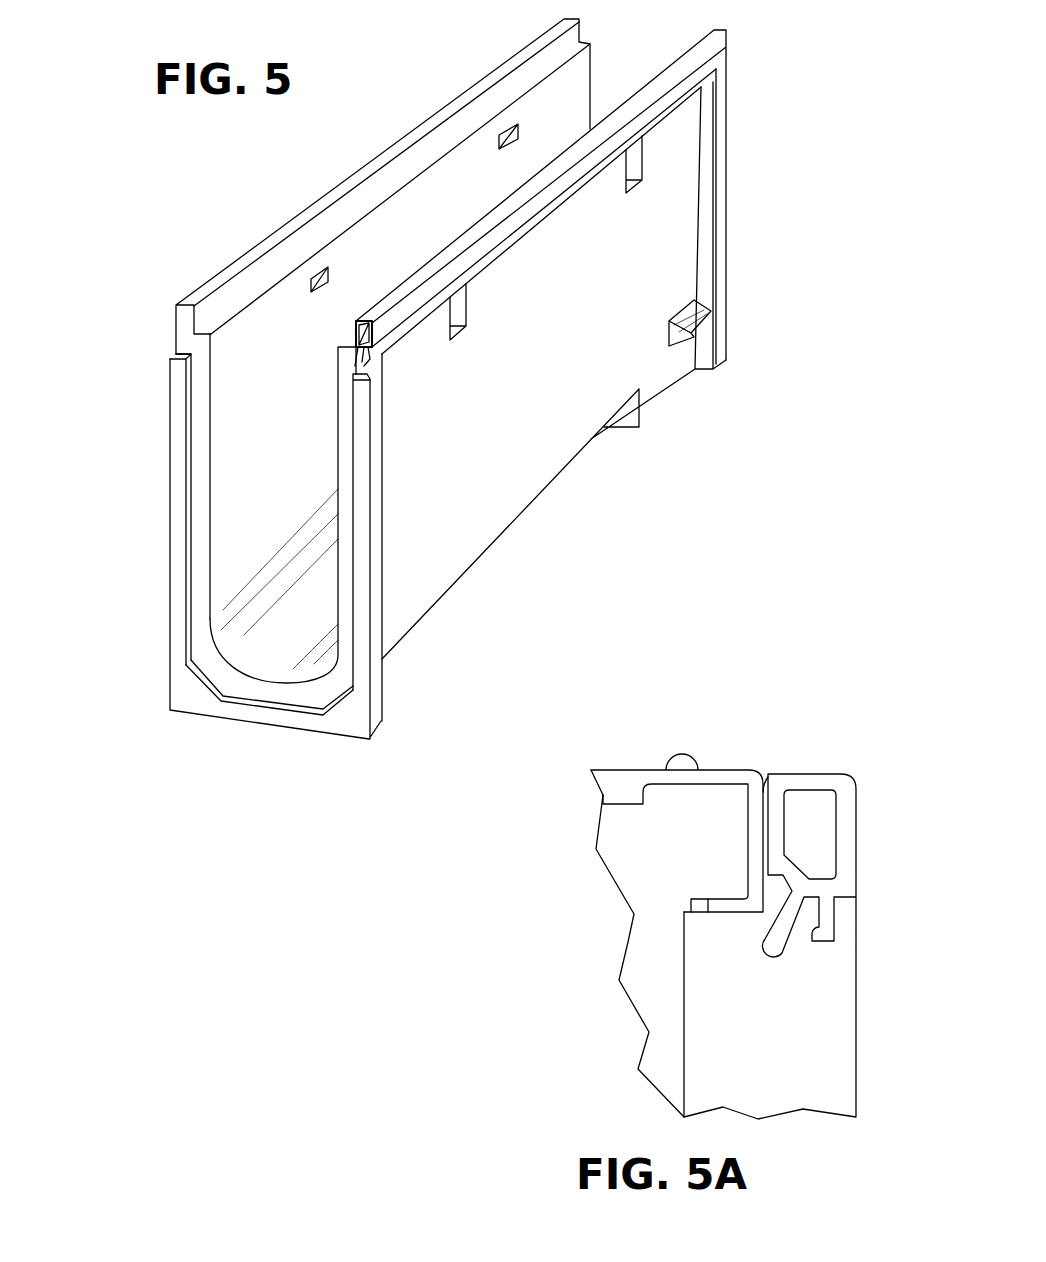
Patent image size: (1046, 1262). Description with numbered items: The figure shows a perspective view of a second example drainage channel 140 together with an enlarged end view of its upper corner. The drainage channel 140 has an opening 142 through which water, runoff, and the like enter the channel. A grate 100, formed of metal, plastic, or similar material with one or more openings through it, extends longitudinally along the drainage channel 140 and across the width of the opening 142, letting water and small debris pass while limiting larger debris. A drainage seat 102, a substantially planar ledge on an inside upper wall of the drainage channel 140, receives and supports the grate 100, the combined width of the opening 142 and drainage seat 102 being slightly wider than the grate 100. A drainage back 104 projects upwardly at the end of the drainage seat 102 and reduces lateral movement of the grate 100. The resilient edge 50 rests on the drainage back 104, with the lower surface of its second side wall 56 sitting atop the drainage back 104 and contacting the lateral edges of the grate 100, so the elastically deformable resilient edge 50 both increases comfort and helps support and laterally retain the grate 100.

In FIG. 5, the resilient edge 50 is at (648, 100).
In FIG. 5A, the resilient edge 50 is at (848, 772).
In FIG. 5A, the second side wall 56 is at (762, 812).
In FIG. 5A, the grate 100 is at (633, 768).
In FIG. 5, the drainage seat 102 is at (353, 318).
In FIG. 5A, the drainage seat 102 is at (707, 900).
In FIG. 5, the drainage back 104 is at (256, 268).
In FIG. 5A, the drainage back 104 is at (760, 885).
In FIG. 5, the drainage channel 140 is at (178, 432).
In FIG. 5, the opening 142 is at (488, 178).